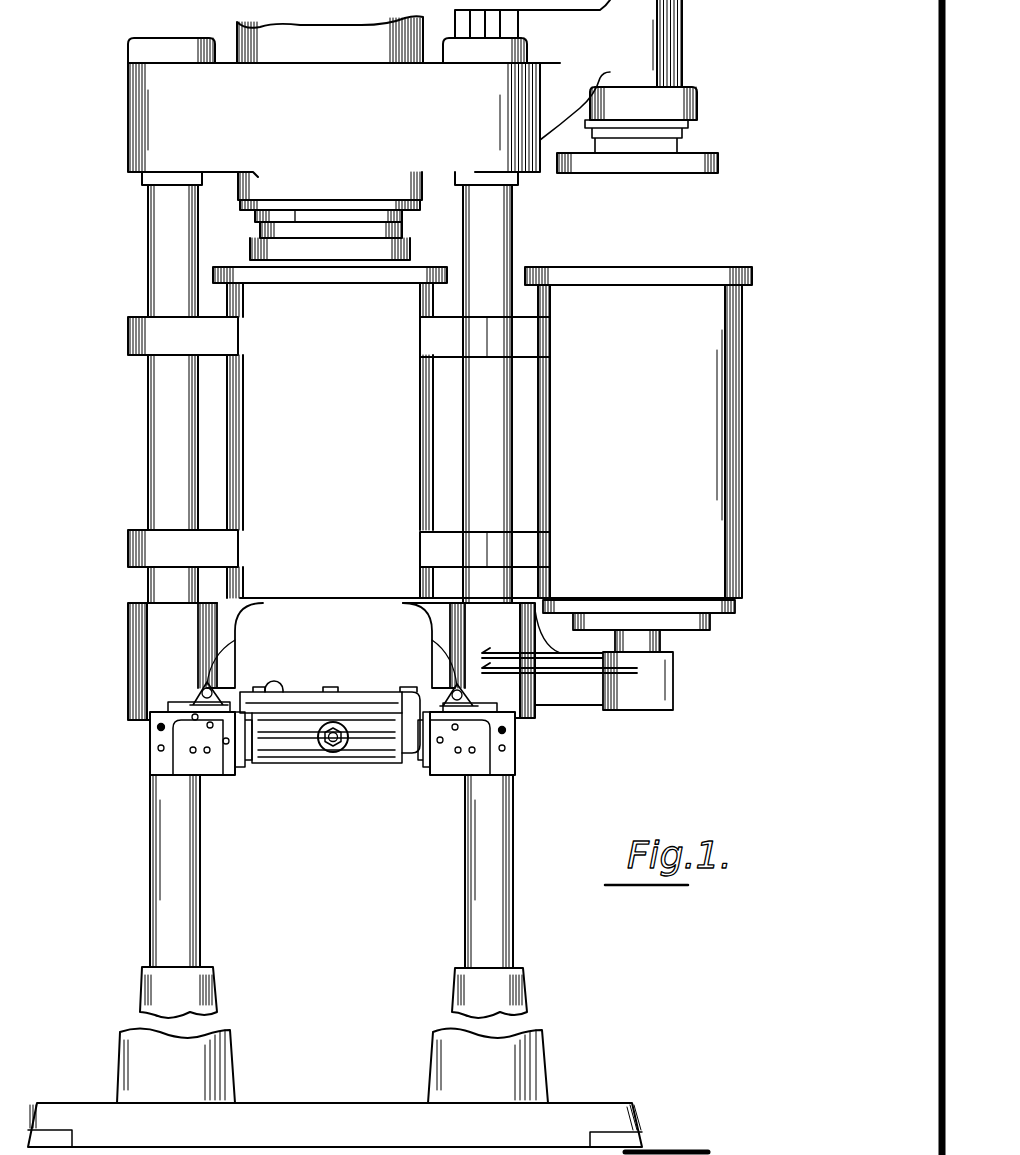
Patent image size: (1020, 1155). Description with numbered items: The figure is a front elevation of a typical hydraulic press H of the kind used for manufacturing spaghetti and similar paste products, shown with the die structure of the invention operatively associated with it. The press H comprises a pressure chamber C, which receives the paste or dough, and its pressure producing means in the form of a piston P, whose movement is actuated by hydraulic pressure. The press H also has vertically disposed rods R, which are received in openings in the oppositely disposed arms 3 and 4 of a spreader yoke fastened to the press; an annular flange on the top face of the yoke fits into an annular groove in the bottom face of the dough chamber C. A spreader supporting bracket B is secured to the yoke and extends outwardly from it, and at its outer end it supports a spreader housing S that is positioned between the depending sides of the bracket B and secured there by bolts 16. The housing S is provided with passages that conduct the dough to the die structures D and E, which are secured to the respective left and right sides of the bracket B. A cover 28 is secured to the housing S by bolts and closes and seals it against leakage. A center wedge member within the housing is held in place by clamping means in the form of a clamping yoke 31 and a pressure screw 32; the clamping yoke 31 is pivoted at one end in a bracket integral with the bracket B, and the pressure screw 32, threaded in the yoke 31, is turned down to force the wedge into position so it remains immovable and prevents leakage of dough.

The piston P is at (415, 252).
The hydraulic press H is at (218, 380).
The pressure chamber C is at (280, 452).
The spreader supporting bracket B is at (263, 633).
The arm 3 is at (128, 603).
The spreader housing S is at (188, 698).
The die structure D is at (150, 743).
The die structure E is at (503, 753).
The rods R is at (158, 822).
The arm 4 is at (515, 695).
The cover 28 is at (372, 686).
The bolts 16 is at (283, 691).
The clamping yoke 31 is at (383, 735).
The pressure screw 32 is at (333, 745).